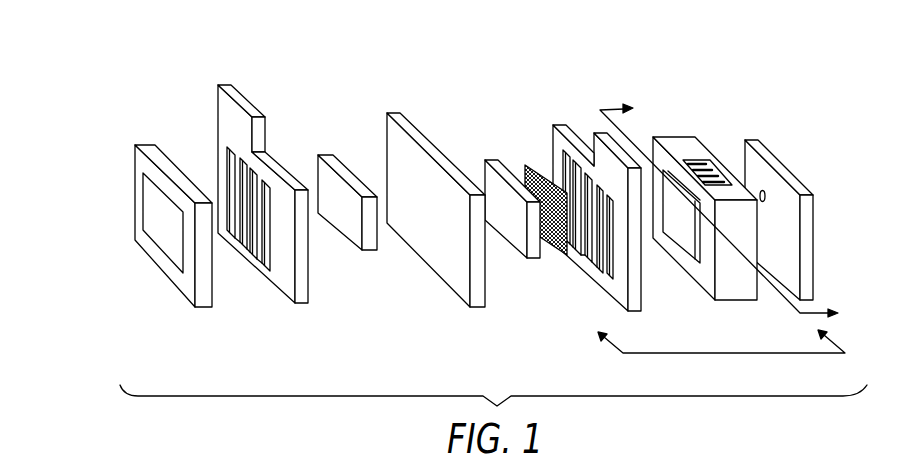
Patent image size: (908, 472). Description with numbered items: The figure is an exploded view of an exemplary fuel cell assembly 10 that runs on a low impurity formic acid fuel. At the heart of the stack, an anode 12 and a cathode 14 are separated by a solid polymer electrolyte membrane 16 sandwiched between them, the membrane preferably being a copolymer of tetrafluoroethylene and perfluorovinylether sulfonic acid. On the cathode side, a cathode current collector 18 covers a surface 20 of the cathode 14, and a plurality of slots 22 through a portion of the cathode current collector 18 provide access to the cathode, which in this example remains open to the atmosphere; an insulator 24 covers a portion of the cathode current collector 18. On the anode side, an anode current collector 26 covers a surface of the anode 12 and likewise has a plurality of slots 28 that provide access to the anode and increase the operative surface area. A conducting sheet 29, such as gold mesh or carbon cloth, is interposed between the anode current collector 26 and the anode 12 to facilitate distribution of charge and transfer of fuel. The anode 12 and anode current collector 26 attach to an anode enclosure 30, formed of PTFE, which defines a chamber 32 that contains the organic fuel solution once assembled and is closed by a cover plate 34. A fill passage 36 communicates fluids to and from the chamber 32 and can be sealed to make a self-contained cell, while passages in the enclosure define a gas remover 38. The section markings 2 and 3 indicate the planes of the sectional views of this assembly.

The fuel cell assembly 10 is at (136, 86).
The anode 12 is at (496, 160).
The cathode 14 is at (343, 162).
The solid polymer electrolyte membrane 16 is at (403, 145).
The cathode current collector 18 is at (233, 127).
The surface of the cathode 20 is at (372, 240).
The slots 22 is at (257, 264).
The insulator 24 is at (187, 285).
The anode current collector 26 is at (563, 127).
The slots 28 is at (597, 266).
The conducting sheet 29 is at (530, 165).
The anode enclosure 30 is at (668, 137).
The chamber 32 is at (691, 226).
The cover plate 34 is at (753, 142).
The fill passage 36 is at (764, 189).
The gas remover 38 is at (698, 147).
The section line 2- 2 is at (719, 207).
The section line 3- 3 is at (724, 346).